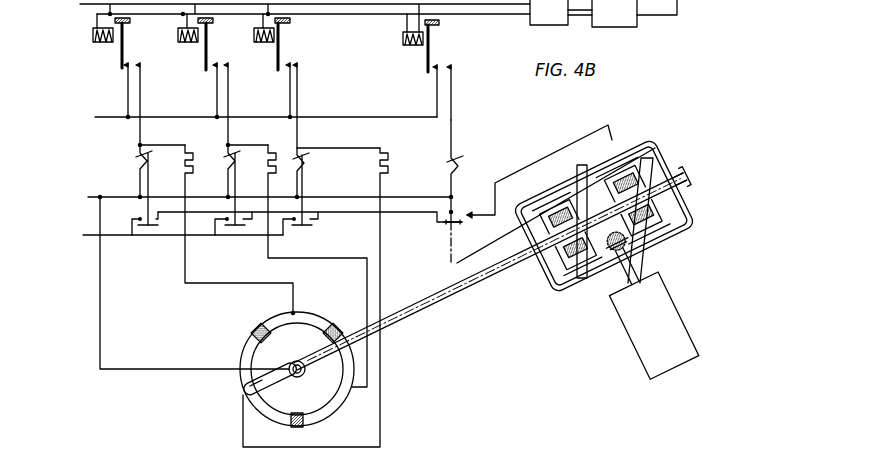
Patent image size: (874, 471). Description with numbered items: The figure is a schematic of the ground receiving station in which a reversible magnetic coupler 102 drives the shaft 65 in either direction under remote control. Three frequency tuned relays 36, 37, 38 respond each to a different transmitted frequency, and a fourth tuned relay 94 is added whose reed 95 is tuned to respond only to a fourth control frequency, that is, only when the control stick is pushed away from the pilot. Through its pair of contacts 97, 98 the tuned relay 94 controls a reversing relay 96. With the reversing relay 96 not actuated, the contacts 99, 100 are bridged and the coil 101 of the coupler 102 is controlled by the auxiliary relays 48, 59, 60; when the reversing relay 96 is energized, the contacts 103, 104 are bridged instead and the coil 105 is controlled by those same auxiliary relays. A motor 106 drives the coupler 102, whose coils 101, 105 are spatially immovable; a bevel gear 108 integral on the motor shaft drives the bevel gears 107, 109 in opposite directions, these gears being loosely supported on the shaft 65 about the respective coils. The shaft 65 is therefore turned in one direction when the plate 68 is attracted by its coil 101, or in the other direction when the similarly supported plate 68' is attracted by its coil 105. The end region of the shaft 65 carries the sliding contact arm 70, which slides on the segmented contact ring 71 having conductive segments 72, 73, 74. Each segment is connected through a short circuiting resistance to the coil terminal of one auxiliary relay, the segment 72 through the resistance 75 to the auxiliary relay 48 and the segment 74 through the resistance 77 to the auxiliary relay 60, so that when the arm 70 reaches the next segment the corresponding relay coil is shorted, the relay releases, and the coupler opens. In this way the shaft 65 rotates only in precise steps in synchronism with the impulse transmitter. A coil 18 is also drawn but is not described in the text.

The tuned relay 36 is at (112, 42).
The tuned relay 37 is at (197, 42).
The tuned relay 38 is at (273, 42).
The fourth tuned relay 94 is at (420, 45).
The reed 95 is at (430, 43).
The contact 97 is at (437, 85).
The contact 98 is at (452, 95).
The auxiliary relay 48 is at (157, 162).
The auxiliary relay 59 is at (240, 162).
The auxiliary relay 60 is at (310, 170).
The reversing relay 96 is at (462, 162).
The short circuiting resistance 75 is at (183, 163).
The coil 18 is at (263, 163).
The short circuiting resistance 77 is at (385, 165).
The contact 103 is at (451, 207).
The contact 104 is at (468, 210).
The contact 100 is at (462, 226).
The contact 99 is at (450, 228).
The shaft 65 is at (417, 313).
The plate 68 is at (595, 240).
The plate 68' is at (706, 190).
The rotatable contact arm 70 is at (275, 378).
The segmented contact ring 71 is at (318, 322).
The segment 72 is at (268, 318).
The segment 73 is at (337, 408).
The segment 74 is at (248, 375).
The coil 101 is at (555, 213).
The magnetic reversible coupler 102 is at (656, 140).
The coil 105 is at (620, 183).
The motor 106 is at (672, 332).
The bevel gear 107 is at (580, 270).
The bevel gear 108 is at (607, 260).
The bevel gear 109 is at (640, 242).